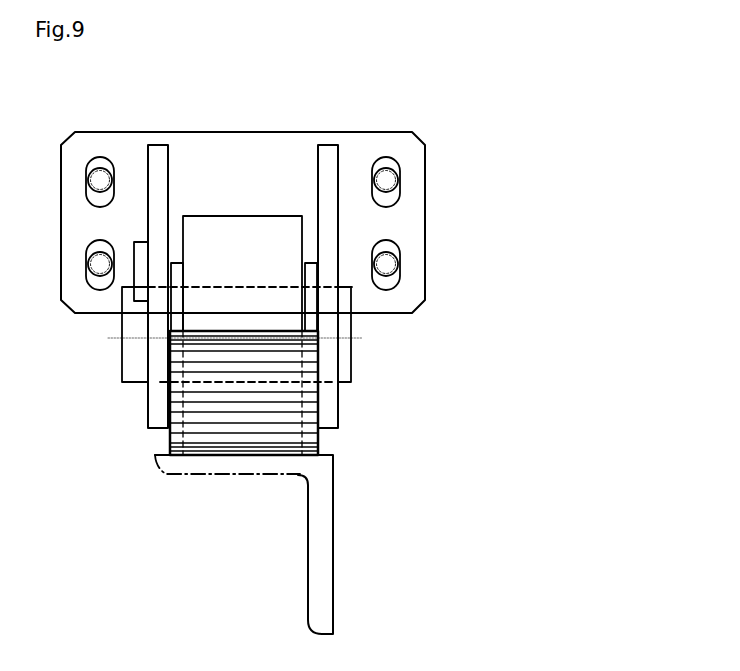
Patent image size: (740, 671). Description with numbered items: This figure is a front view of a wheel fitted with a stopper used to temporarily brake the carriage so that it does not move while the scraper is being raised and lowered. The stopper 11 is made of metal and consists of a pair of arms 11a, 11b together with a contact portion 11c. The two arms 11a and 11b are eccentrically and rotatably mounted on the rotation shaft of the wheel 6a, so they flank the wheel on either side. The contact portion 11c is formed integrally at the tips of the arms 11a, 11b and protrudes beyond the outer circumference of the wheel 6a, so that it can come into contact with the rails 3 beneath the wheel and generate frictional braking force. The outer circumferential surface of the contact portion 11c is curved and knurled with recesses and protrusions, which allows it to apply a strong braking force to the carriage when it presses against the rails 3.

The stopper 11 is at (140, 410).
The arm 11a is at (330, 151).
The arm 11b is at (157, 152).
The contact portion 11c is at (283, 420).
The wheel 6a is at (232, 230).
The rails 3 is at (238, 468).